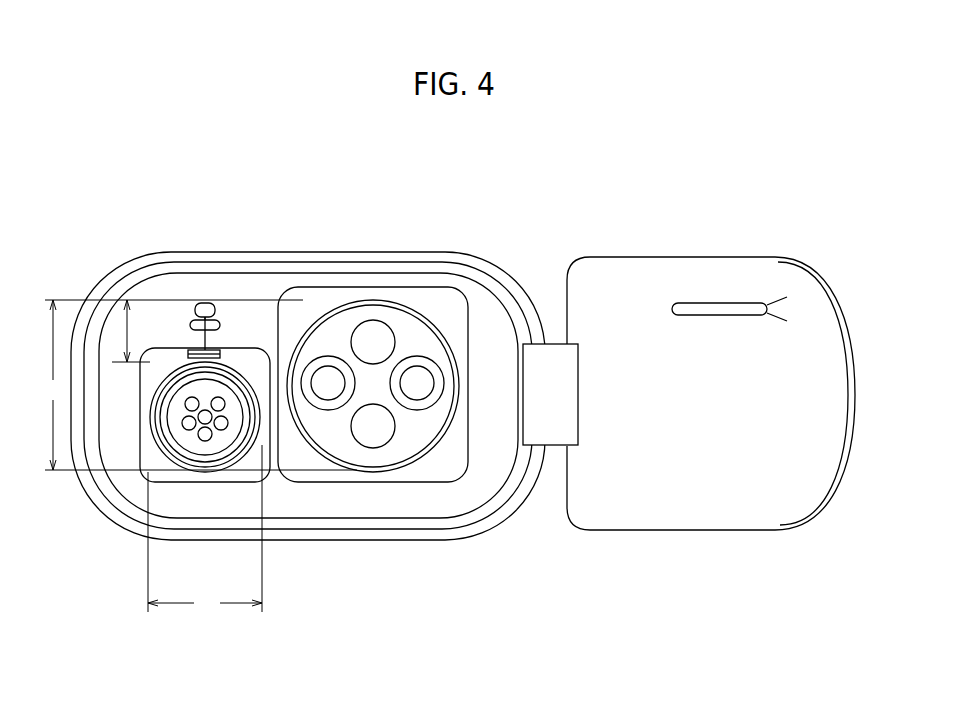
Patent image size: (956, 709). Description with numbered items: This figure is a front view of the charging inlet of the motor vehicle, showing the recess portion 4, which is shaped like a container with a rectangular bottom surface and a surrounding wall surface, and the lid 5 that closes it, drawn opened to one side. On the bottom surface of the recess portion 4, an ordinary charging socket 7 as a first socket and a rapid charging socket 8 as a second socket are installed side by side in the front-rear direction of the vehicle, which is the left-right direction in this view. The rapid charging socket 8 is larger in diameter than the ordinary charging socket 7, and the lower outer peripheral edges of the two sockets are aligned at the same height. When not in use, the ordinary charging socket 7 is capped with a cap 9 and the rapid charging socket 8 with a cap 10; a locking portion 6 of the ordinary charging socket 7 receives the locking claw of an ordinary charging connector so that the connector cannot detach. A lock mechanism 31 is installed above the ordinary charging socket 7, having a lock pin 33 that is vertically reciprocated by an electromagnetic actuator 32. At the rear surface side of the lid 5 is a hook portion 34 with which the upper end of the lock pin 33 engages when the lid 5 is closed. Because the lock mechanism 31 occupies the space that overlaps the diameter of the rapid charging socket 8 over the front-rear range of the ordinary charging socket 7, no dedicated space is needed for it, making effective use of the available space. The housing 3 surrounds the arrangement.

The charging port housing 3 is at (317, 251).
The recess portion 4 is at (335, 520).
The lid 5 is at (723, 531).
The locking portion 6 is at (205, 303).
The ordinary charging socket 7 is at (210, 450).
The rapid charging socket 8 is at (400, 452).
The cap 9 is at (246, 452).
The cap 10 is at (395, 300).
The lock mechanism 31 is at (197, 306).
The electromagnetic actuator 32 is at (218, 326).
The lock pin 33 is at (217, 313).
The hook portion 34 is at (714, 305).